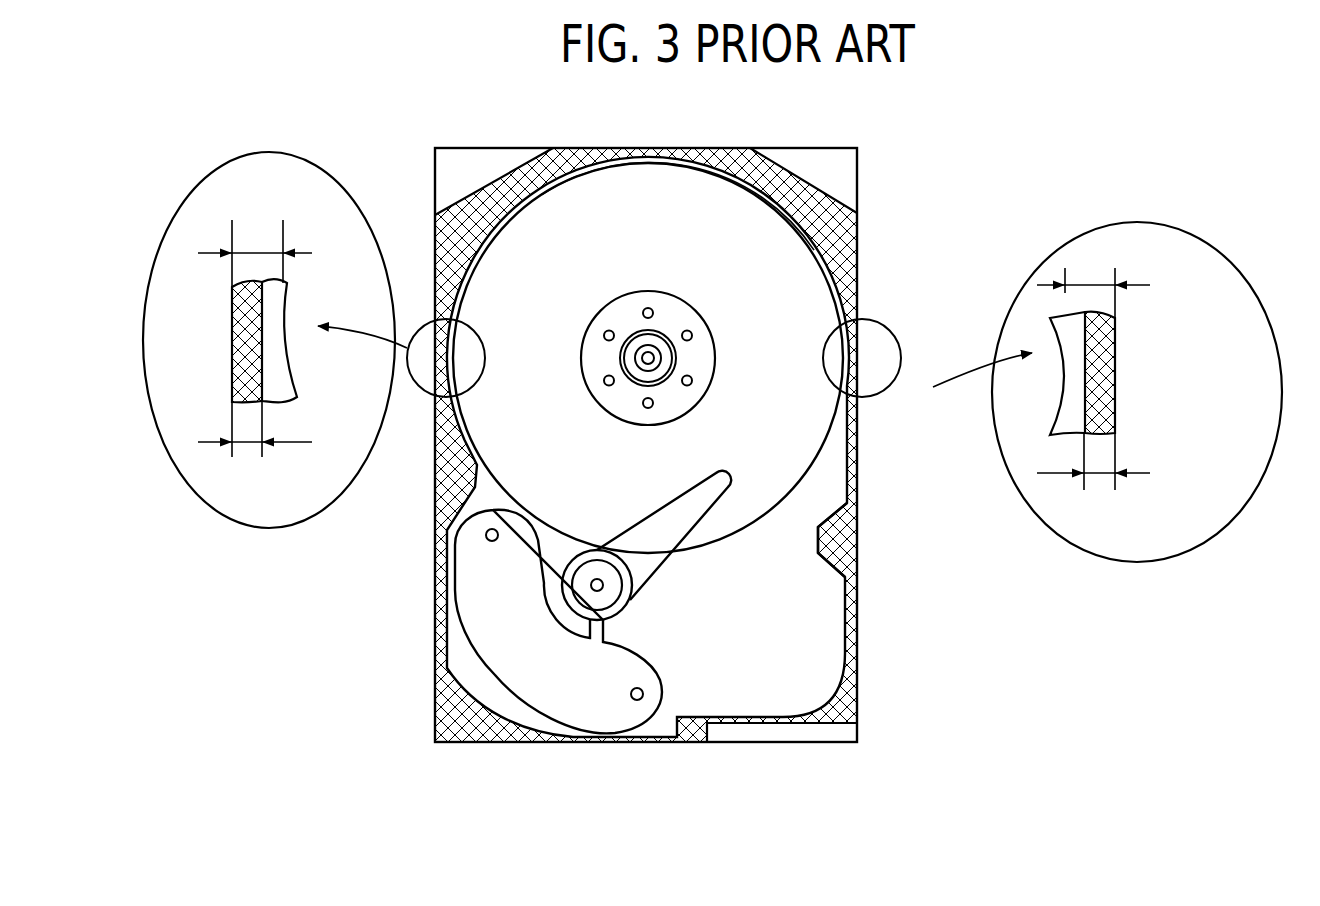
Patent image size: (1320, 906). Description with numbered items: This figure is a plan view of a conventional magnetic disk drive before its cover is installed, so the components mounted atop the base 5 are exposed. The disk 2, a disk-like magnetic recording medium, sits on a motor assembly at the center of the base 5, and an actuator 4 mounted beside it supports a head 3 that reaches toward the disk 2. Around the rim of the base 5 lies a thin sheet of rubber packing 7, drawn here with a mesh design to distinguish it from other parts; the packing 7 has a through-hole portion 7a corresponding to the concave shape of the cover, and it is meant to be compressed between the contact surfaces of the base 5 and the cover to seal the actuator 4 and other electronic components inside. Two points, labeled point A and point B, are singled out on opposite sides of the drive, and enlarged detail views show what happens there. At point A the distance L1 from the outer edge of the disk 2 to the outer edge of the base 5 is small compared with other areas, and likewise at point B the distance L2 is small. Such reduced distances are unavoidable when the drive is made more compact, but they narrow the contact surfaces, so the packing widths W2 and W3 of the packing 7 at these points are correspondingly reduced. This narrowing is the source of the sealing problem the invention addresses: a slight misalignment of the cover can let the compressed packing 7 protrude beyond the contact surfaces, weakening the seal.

The disk 2 is at (773, 440).
The head 3 is at (702, 502).
The actuator 4 is at (622, 600).
The base 5 is at (843, 183).
The packing 7 is at (858, 230).
The through-hole portion 7a is at (847, 587).
The point A is at (897, 337).
The point B is at (421, 316).
The distance L1 is at (1097, 283).
The distance L2 is at (250, 248).
The packing width W2 is at (1107, 473).
The packing width W3 is at (250, 442).